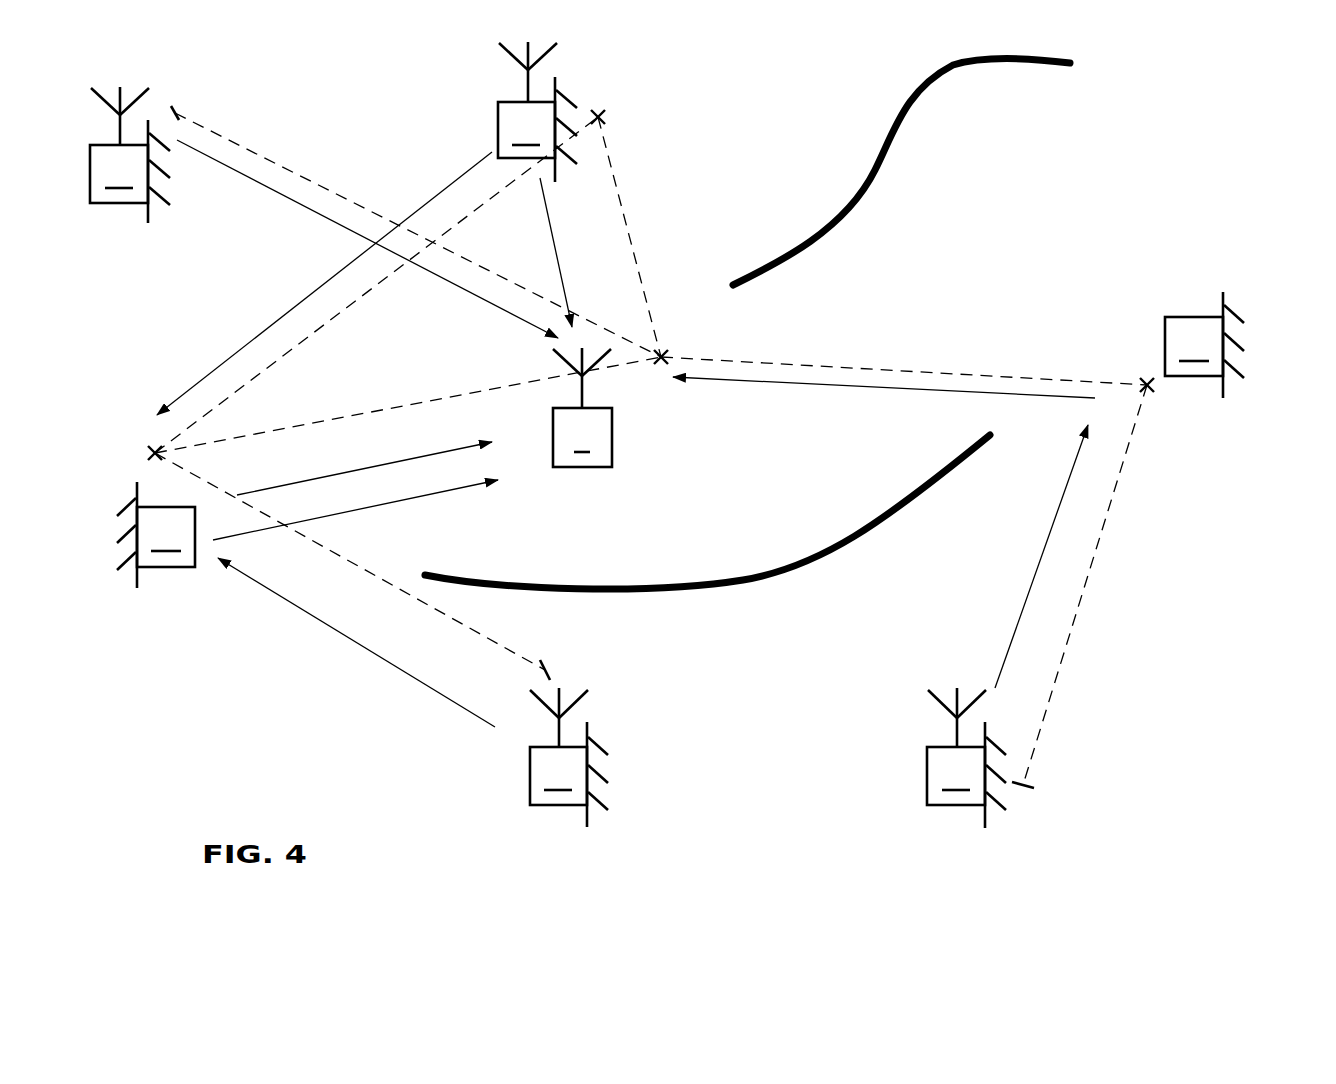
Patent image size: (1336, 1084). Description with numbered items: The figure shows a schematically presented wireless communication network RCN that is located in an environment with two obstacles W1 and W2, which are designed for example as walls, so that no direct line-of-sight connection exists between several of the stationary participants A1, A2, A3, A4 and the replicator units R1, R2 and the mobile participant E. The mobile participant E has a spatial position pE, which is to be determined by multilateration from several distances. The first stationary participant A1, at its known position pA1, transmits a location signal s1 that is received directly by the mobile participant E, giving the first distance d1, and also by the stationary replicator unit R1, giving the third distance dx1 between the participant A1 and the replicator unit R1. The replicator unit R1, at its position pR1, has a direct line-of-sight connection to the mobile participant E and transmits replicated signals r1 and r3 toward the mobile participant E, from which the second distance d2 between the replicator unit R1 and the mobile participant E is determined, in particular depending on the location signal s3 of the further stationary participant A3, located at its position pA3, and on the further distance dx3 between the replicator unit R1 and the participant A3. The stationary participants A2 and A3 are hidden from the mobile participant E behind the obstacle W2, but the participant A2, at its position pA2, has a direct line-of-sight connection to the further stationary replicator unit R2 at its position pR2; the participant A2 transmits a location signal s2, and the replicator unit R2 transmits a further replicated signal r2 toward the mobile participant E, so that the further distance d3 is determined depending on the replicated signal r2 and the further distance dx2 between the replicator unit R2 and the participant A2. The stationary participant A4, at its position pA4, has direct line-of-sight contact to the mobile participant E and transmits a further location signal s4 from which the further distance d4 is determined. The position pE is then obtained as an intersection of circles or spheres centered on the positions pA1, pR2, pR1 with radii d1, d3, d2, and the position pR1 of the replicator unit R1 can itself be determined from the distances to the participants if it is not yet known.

The first stationary participant A1 is at (537, 112).
The stationary participant A2 is at (966, 758).
The second stationary participant A3 is at (569, 757).
The further stationary participant A4 is at (130, 155).
The stationary replicator unit R1 is at (156, 535).
The further stationary replicator unit R2 is at (1204, 345).
The mobile participant E is at (582, 407).
The spatial position of first participant pA1 is at (610, 110).
The position of anchor A2 pA2 is at (1034, 793).
The position of anchor A3 pA3 is at (560, 670).
The position of anchor A4 pA4 is at (186, 98).
The spatial position of mobile participant pE is at (668, 350).
The spatial position of replicator unit pR1 is at (148, 444).
The spatial position of further replicator unit pR2 is at (1140, 378).
The first distance d1 is at (623, 203).
The second distance d2 is at (418, 400).
The further distance d3 is at (948, 370).
The further distance d4 is at (335, 185).
The third distance dx1 is at (314, 335).
The further distance dx2 is at (1090, 588).
The further distance dx3 is at (468, 622).
The location signal s1 is at (300, 296).
The location signal s2 is at (1040, 575).
The location signal s3 is at (352, 655).
The further location signal s4 is at (272, 194).
The reflected signal from R1 r1 is at (366, 460).
The further replicated signal r2 is at (853, 400).
The further replicated signal r3 is at (385, 507).
The obstacle W1 is at (883, 145).
The obstacle W2 is at (828, 570).
The wireless communication network RCN is at (1200, 680).